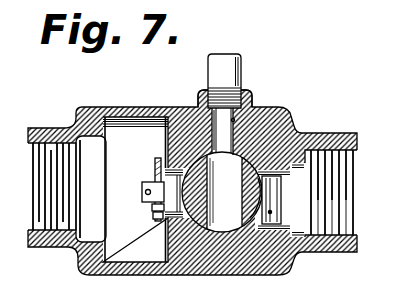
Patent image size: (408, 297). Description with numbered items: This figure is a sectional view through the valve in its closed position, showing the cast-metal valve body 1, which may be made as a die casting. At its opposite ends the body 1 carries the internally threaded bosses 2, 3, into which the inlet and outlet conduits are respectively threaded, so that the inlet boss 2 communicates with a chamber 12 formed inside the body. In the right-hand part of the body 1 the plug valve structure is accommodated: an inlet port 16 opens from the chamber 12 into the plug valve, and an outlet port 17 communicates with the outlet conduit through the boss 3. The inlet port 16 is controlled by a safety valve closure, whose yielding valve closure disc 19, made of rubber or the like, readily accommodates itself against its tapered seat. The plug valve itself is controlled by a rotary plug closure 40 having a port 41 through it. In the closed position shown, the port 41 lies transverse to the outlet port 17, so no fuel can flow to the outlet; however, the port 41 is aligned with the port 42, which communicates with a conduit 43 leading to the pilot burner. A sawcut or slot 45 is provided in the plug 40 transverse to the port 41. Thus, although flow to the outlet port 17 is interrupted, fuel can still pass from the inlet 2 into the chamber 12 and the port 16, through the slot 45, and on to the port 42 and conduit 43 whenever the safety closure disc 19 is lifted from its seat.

The valve body 1 is at (221, 268).
The internally threaded boss 2 is at (38, 128).
The internally threaded boss 3 is at (326, 133).
The chamber 12 is at (129, 189).
The inlet port 16 is at (156, 210).
The outlet port 17 is at (272, 213).
The yielding valve closure disc 19 is at (157, 219).
The rotary plug closure 40 is at (247, 221).
The port 41 is at (236, 201).
The port 42 is at (236, 118).
The conduit 43 is at (241, 70).
The sawcut or slot 45 is at (155, 177).